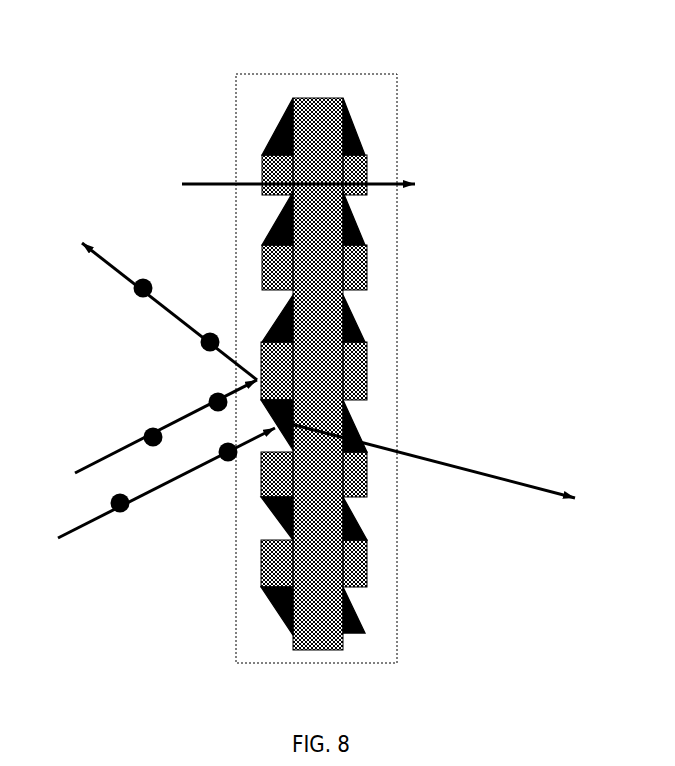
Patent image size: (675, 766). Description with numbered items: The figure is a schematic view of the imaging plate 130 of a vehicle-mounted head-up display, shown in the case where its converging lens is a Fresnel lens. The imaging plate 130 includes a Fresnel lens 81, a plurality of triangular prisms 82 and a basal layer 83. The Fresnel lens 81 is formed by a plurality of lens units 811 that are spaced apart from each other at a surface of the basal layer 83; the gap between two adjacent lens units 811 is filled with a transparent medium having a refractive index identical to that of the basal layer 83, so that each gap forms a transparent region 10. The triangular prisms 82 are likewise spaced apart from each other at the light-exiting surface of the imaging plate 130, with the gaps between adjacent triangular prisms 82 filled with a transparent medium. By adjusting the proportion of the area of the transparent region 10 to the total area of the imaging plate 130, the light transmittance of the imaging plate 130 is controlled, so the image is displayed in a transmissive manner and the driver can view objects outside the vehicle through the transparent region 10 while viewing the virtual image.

The imaging plate 130 is at (246, 73).
The basal layer 83 is at (312, 97).
The triangular prisms 82 is at (358, 123).
The Fresnel lens 81 is at (273, 227).
The lens units 811 is at (278, 313).
The transparent region 10 is at (366, 158).